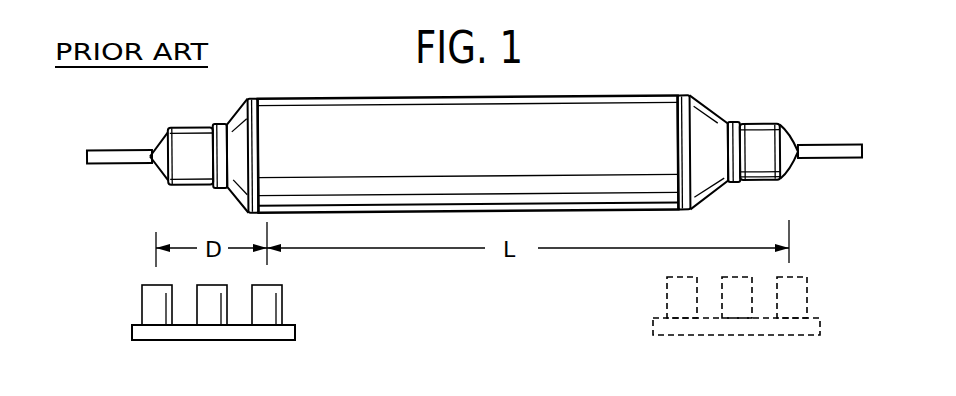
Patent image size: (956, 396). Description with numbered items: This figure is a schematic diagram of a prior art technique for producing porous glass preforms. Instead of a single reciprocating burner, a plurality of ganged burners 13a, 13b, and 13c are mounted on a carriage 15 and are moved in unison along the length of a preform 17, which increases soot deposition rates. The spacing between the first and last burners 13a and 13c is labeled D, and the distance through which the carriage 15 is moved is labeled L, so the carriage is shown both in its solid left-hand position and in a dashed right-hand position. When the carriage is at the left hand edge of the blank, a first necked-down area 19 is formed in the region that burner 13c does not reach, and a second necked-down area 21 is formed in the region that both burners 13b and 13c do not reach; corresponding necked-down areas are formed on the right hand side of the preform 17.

The ganged burner 13a is at (154, 303).
The ganged burner 13b is at (215, 313).
The ganged burner 13c is at (276, 297).
The carriage 15 is at (272, 332).
The preform 17 is at (675, 123).
The first necked-down area 19 is at (220, 106).
The second necked-down area 21 is at (140, 126).